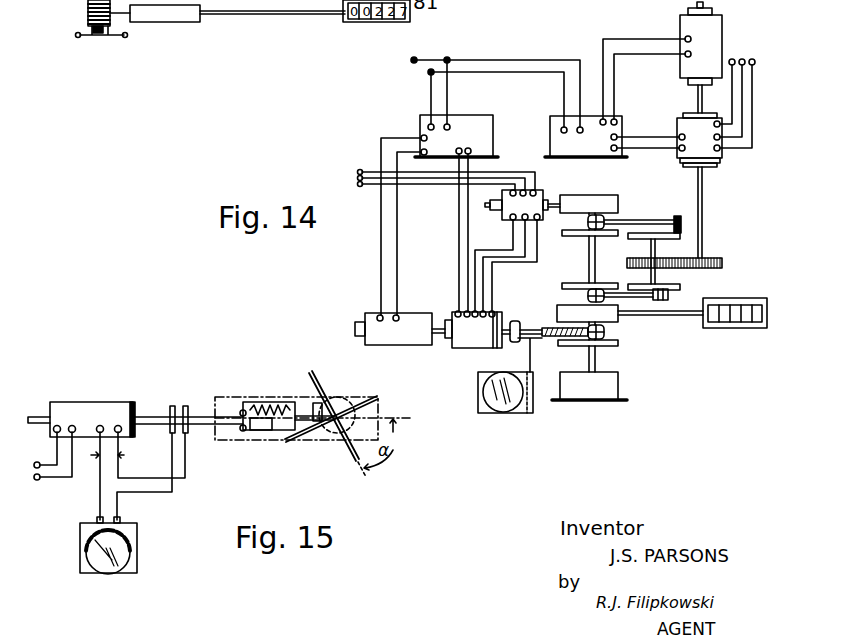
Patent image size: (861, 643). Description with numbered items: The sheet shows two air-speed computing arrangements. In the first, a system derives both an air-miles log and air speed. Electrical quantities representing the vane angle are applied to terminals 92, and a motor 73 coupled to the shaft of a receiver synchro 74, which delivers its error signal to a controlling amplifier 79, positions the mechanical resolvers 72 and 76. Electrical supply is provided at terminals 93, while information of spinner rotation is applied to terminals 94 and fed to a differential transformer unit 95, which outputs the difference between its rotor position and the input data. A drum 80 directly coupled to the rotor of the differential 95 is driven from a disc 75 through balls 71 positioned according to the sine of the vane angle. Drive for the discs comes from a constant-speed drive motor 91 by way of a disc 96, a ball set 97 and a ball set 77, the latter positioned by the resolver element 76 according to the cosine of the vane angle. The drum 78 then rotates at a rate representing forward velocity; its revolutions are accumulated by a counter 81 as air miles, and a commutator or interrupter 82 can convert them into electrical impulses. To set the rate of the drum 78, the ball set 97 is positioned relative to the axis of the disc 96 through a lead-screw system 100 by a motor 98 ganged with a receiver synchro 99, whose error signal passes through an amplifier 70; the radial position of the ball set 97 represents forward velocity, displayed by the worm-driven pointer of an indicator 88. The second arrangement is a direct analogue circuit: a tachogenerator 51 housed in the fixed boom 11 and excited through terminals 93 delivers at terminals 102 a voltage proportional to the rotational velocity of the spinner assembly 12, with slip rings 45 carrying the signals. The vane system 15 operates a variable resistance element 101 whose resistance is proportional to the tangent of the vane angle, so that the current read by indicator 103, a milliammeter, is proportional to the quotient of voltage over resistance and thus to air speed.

In FIG. 14, the commutator or interrupter 82 is at (84, 15).
In FIG. 14, the drum 78 is at (205, 20).
In FIG. 14, the counter 81 is at (740, 303).
In FIG. 14, the supply terminals 93 is at (418, 68).
In FIG. 15, the supply terminals 93 is at (35, 481).
In FIG. 14, the amplifier 70 is at (420, 124).
In FIG. 14, the controlling amplifier 79 is at (556, 128).
In FIG. 14, the motor 73 is at (681, 28).
In FIG. 14, the terminals 92 is at (756, 56).
In FIG. 14, the receiver synchro 74 is at (678, 126).
In FIG. 14, the terminals 94 is at (353, 170).
In FIG. 14, the differential transformer unit 95 is at (544, 193).
In FIG. 14, the drum 80 is at (606, 195).
In FIG. 14, the mechanical resolver 72 is at (676, 228).
In FIG. 14, the balls 71 is at (588, 222).
In FIG. 14, the disc 75 is at (578, 237).
In FIG. 14, the ball set 77 is at (586, 296).
In FIG. 14, the resolver element 76 is at (663, 298).
In FIG. 14, the ball set 97 is at (607, 334).
In FIG. 14, the motor 98 is at (367, 313).
In FIG. 14, the receiver synchro 99 is at (452, 313).
In FIG. 14, the lead-screw system 100 is at (550, 338).
In FIG. 14, the disc 96 is at (605, 345).
In FIG. 14, the indicator 88 is at (478, 386).
In FIG. 14, the constant-speed drive motor 91 is at (620, 386).
In FIG. 15, the tachogenerator 51 is at (75, 402).
In FIG. 15, the fixed boom 11 is at (143, 395).
In FIG. 15, the slip rings 45 is at (175, 406).
In FIG. 15, the variable resistance element 101 is at (275, 400).
In FIG. 15, the vane system 15 is at (323, 391).
In FIG. 15, the spinner assembly 12 is at (318, 447).
In FIG. 15, the output terminals 102 is at (122, 440).
In FIG. 15, the indicator 103 is at (141, 549).